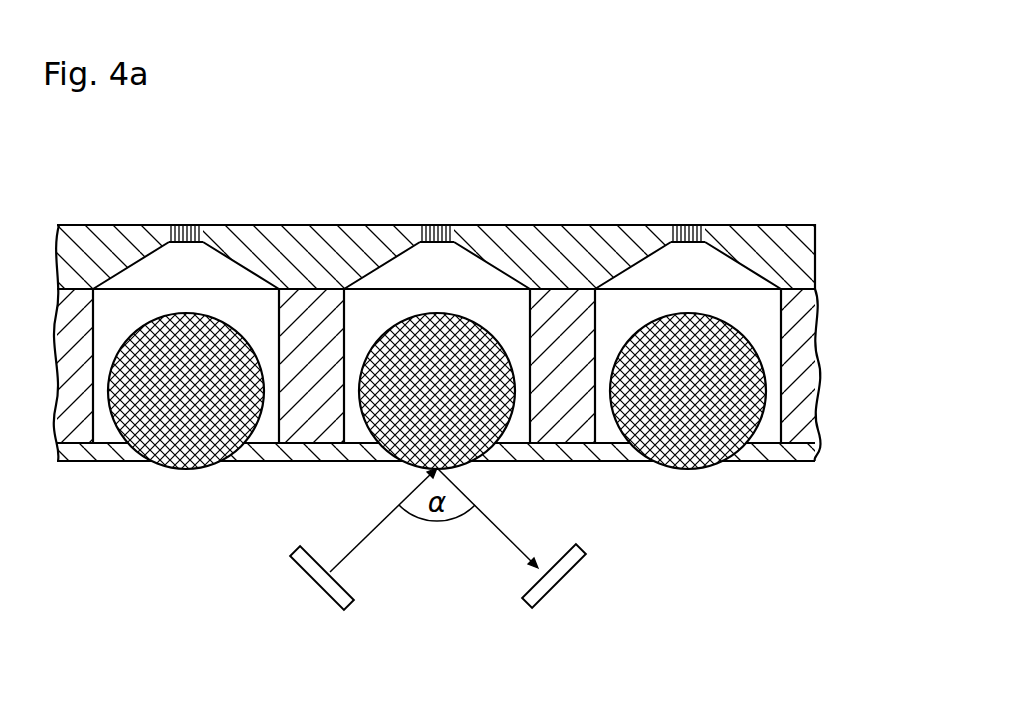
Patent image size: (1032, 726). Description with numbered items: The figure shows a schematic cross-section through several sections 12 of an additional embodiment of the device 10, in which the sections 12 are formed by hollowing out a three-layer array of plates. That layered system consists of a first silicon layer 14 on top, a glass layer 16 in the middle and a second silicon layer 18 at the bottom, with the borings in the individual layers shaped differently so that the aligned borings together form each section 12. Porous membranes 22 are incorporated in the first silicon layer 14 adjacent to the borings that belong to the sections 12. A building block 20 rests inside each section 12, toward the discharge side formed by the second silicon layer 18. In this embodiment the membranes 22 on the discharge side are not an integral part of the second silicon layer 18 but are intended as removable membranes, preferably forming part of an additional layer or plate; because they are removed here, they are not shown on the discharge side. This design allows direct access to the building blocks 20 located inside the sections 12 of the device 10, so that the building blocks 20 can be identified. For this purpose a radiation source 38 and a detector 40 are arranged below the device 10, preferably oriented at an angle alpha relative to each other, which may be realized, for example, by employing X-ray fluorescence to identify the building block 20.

The device 10 is at (565, 146).
The section 12 is at (725, 300).
The first silicon layer 14 is at (812, 244).
The glass layer 16 is at (798, 330).
The second silicon layer 18 is at (803, 455).
The building block 20 is at (747, 422).
The membrane 22 is at (438, 225).
The radiation source 38 is at (313, 575).
The detector 40 is at (547, 585).